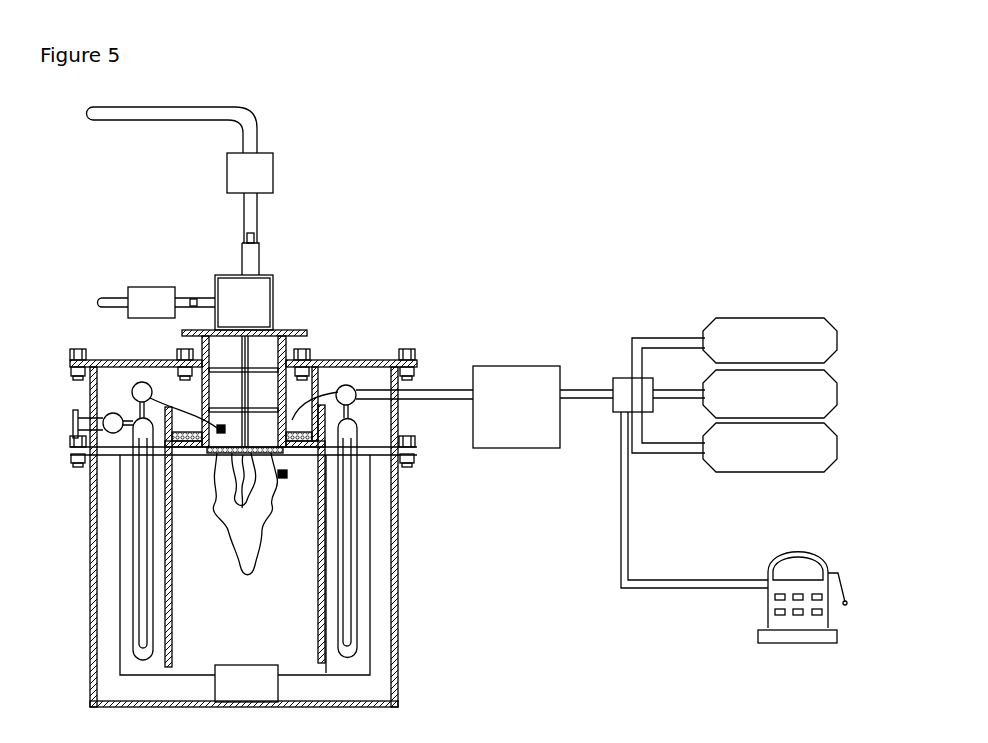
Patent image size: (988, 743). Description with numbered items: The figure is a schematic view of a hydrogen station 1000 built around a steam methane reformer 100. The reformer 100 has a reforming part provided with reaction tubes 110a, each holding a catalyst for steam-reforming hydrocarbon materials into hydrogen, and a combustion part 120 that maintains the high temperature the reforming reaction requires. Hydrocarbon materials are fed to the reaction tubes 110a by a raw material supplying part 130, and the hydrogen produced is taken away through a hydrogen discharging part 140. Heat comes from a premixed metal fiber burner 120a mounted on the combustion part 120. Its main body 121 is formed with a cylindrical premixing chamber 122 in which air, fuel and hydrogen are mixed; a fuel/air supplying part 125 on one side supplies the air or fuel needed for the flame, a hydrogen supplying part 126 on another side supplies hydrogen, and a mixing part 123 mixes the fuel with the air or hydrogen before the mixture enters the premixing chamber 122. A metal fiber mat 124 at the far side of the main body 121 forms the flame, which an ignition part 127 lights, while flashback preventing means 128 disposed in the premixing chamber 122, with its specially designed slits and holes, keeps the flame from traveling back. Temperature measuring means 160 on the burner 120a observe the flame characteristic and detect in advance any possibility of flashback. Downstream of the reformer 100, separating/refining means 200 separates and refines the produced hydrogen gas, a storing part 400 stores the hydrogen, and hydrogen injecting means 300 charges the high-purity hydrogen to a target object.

The hydrogen station 1000 is at (695, 112).
The steam methane reformer 100 is at (378, 196).
The reaction tube 110a is at (357, 607).
The combustion part 120 is at (231, 634).
The premixed metal fiber burner 120a is at (291, 291).
The main body 121 is at (290, 342).
The premixing chamber 122 is at (218, 345).
The mixing part 123 is at (216, 280).
The metal fiber mat 124 is at (215, 456).
The fuel/air supplying part 125 is at (273, 176).
The hydrogen supplying part 126 is at (142, 290).
The ignition part 127 is at (240, 525).
The flashback preventing means 128 is at (313, 387).
The raw material supplying part 130 is at (105, 420).
The hydrogen discharging part 140 is at (413, 356).
The temperature measuring means 160 is at (138, 386).
The separating/refining means 200 is at (498, 366).
The hydrogen injecting means 300 is at (790, 636).
The storing part 400 is at (767, 305).